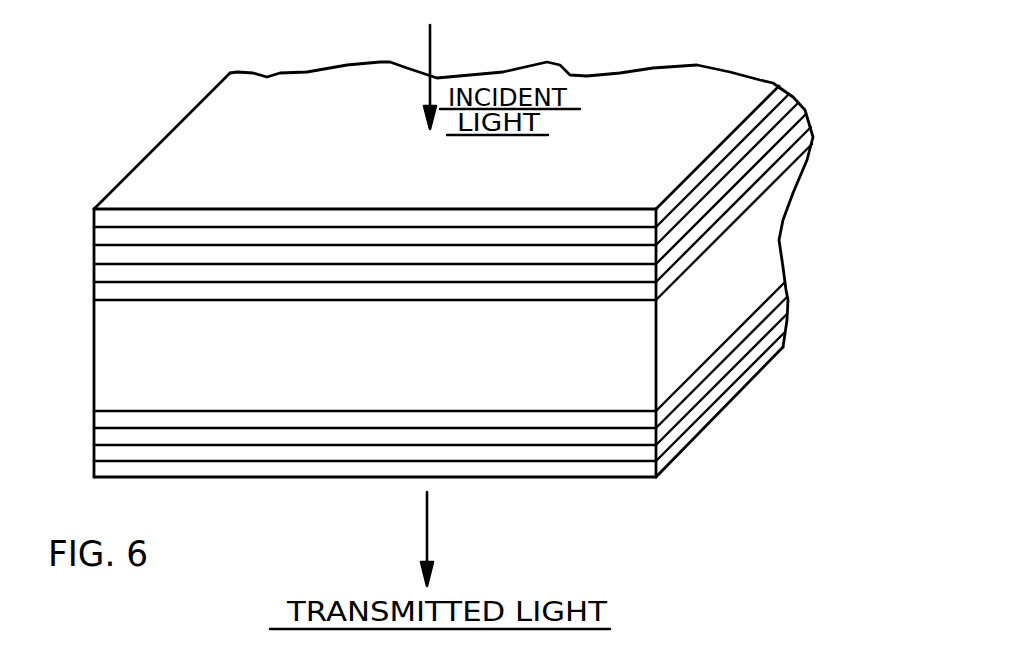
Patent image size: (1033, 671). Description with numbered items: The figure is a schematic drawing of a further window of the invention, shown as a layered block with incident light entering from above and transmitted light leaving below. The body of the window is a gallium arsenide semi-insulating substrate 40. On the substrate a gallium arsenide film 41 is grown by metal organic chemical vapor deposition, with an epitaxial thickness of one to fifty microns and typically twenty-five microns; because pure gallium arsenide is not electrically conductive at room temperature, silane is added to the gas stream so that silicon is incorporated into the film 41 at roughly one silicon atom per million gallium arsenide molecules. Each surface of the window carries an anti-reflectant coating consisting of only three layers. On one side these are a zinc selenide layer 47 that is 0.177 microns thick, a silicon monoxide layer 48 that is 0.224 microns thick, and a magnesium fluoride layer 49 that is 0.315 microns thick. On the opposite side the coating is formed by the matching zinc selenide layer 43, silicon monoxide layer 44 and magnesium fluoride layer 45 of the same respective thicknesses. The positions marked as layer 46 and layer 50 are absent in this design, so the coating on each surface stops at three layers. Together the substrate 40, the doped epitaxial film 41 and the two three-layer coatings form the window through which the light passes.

The gallium arsenide semi-insulating substrate 40 is at (127, 366).
The gallium arsenide film 41 is at (113, 290).
The zinc selenide layer 43 is at (385, 418).
The silicon monoxide layer 44 is at (455, 442).
The magnesium fluoride layer 45 is at (498, 452).
The absent layer 46 is at (580, 472).
The zinc selenide layer 47 is at (208, 272).
The silicon monoxide layer 48 is at (273, 257).
The magnesium fluoride layer 49 is at (308, 243).
The absent layer 50 is at (213, 152).